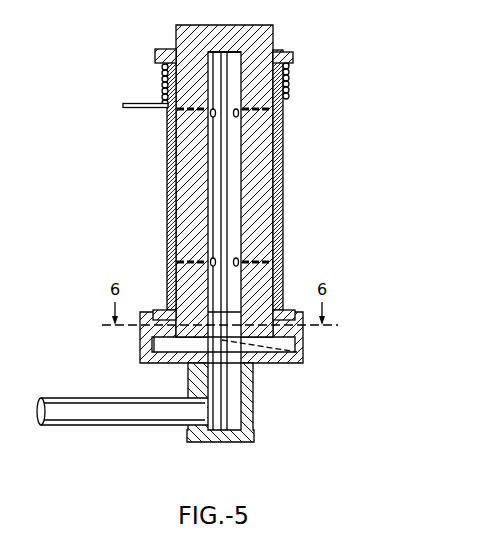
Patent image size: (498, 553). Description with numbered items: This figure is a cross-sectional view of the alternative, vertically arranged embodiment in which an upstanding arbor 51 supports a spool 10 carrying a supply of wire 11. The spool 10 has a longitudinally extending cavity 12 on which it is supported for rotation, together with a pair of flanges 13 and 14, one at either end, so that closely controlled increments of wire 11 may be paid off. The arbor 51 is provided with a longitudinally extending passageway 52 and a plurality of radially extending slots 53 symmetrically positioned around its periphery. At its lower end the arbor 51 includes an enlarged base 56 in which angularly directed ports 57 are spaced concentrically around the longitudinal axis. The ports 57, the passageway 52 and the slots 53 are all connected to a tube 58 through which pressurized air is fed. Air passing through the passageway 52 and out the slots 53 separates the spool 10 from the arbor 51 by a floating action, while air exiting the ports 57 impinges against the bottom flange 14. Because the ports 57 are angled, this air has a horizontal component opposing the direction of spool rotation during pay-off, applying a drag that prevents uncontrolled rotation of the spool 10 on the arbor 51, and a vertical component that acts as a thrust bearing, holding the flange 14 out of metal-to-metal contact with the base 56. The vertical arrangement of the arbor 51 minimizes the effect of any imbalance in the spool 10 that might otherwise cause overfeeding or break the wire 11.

The spool 10 is at (290, 183).
The wire 11 is at (143, 108).
The longitudinally extending cavity 12 is at (177, 51).
The flange 13 is at (155, 53).
The bottom flange 14 is at (163, 310).
The arbor 51 is at (273, 42).
The longitudinally extending passageway 52 is at (240, 158).
The radially extending slots 53 is at (240, 115).
The enlarged base 56 is at (277, 363).
The angularly directed ports 57 is at (153, 345).
The tube 58 is at (95, 426).